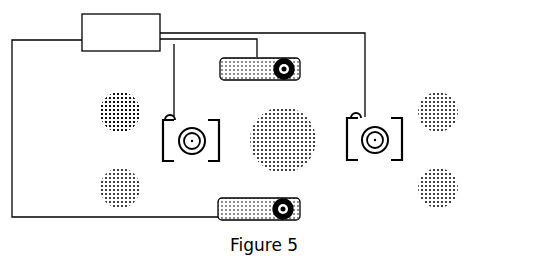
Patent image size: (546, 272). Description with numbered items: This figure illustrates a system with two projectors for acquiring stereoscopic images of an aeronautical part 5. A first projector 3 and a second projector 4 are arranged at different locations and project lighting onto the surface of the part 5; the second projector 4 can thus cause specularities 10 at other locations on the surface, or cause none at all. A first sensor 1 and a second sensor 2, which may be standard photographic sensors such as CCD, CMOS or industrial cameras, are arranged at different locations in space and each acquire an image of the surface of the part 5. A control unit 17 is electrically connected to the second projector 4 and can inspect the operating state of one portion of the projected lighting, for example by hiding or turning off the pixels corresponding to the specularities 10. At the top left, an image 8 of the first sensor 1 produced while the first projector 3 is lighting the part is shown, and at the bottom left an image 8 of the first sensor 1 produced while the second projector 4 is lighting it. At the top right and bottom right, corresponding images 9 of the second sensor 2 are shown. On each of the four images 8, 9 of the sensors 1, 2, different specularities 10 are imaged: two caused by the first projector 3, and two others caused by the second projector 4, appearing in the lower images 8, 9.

The control unit 17 is at (94, 33).
The specularity 10 is at (133, 104).
The image of the first sensor 8 is at (97, 130).
The image of the second sensor 9 is at (464, 124).
The aeronautical part 5 is at (305, 164).
The first sensor 1 is at (200, 162).
The second sensor 2 is at (390, 157).
The first projector 3 is at (302, 70).
The second projector 4 is at (303, 212).